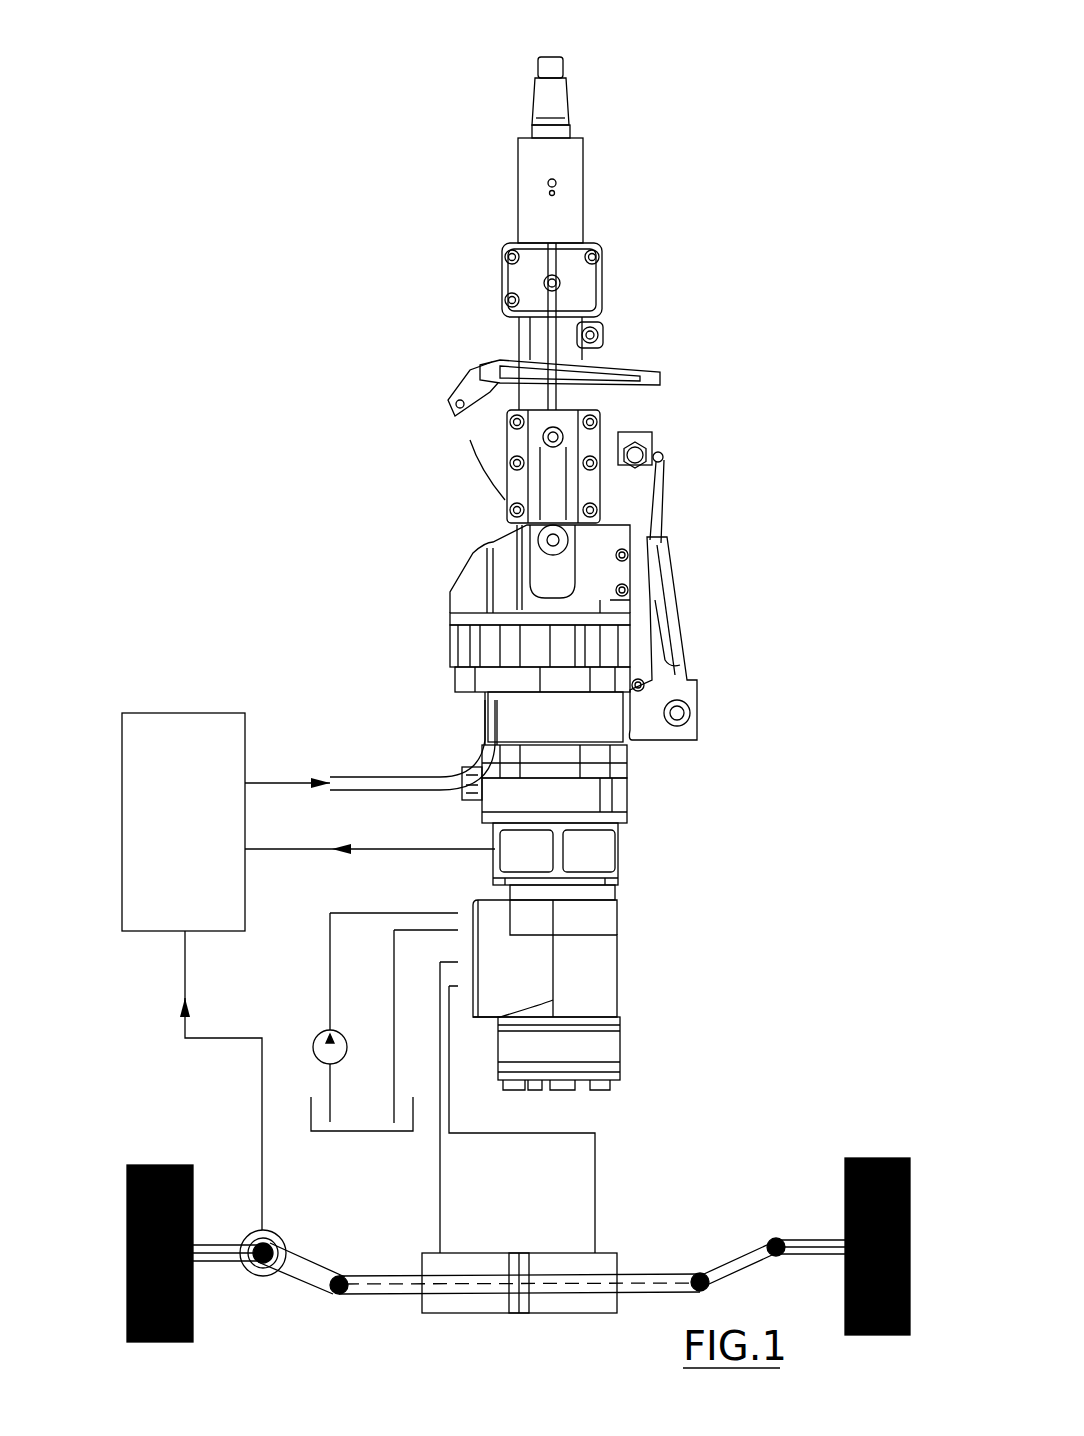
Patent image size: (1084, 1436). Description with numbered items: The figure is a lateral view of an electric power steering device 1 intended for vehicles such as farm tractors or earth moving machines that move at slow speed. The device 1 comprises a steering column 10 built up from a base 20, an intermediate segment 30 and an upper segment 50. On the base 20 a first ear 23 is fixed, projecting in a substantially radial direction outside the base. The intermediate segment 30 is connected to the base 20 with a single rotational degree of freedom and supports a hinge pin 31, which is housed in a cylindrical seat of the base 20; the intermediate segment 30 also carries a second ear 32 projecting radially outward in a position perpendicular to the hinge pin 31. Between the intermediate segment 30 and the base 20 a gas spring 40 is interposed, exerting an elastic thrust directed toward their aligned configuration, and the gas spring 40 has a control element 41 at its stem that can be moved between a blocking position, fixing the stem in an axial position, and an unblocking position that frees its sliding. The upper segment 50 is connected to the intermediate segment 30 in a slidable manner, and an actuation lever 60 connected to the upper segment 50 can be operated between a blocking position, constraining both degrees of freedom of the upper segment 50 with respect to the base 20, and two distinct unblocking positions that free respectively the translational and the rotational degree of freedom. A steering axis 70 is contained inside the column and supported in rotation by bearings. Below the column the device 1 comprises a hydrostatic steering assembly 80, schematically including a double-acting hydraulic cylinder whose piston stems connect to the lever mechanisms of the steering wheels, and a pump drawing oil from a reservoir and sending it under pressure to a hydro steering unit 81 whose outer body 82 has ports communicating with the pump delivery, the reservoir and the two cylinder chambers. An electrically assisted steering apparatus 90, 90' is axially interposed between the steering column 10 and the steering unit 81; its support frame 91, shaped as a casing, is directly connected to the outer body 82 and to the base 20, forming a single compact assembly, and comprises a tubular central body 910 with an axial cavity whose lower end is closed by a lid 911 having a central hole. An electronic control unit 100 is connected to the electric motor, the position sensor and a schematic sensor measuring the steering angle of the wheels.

The electric power steering device 1 is at (217, 120).
The steering column 10 is at (508, 172).
The base 20 is at (512, 567).
The first ear 23 is at (653, 642).
The intermediate segment 30 is at (606, 434).
The hinge pin 31 is at (568, 538).
The second ear 32 is at (648, 433).
The gas spring 40 is at (686, 580).
The control element 41 is at (665, 460).
The upper segment 50 is at (604, 327).
The actuation lever 60 is at (663, 374).
The steering axis 70 is at (569, 108).
The hydrostatic steering assembly 80 is at (634, 1029).
The hydro steering unit 81 is at (600, 991).
The outer body 82 is at (575, 972).
The electrically assisted steering apparatus 90 is at (655, 767).
The electrically assisted steering apparatus 90' is at (655, 767).
The support frame 91 is at (565, 819).
The central body 910 is at (577, 802).
The lid 911 is at (563, 868).
The electronic control unit 100 is at (187, 742).